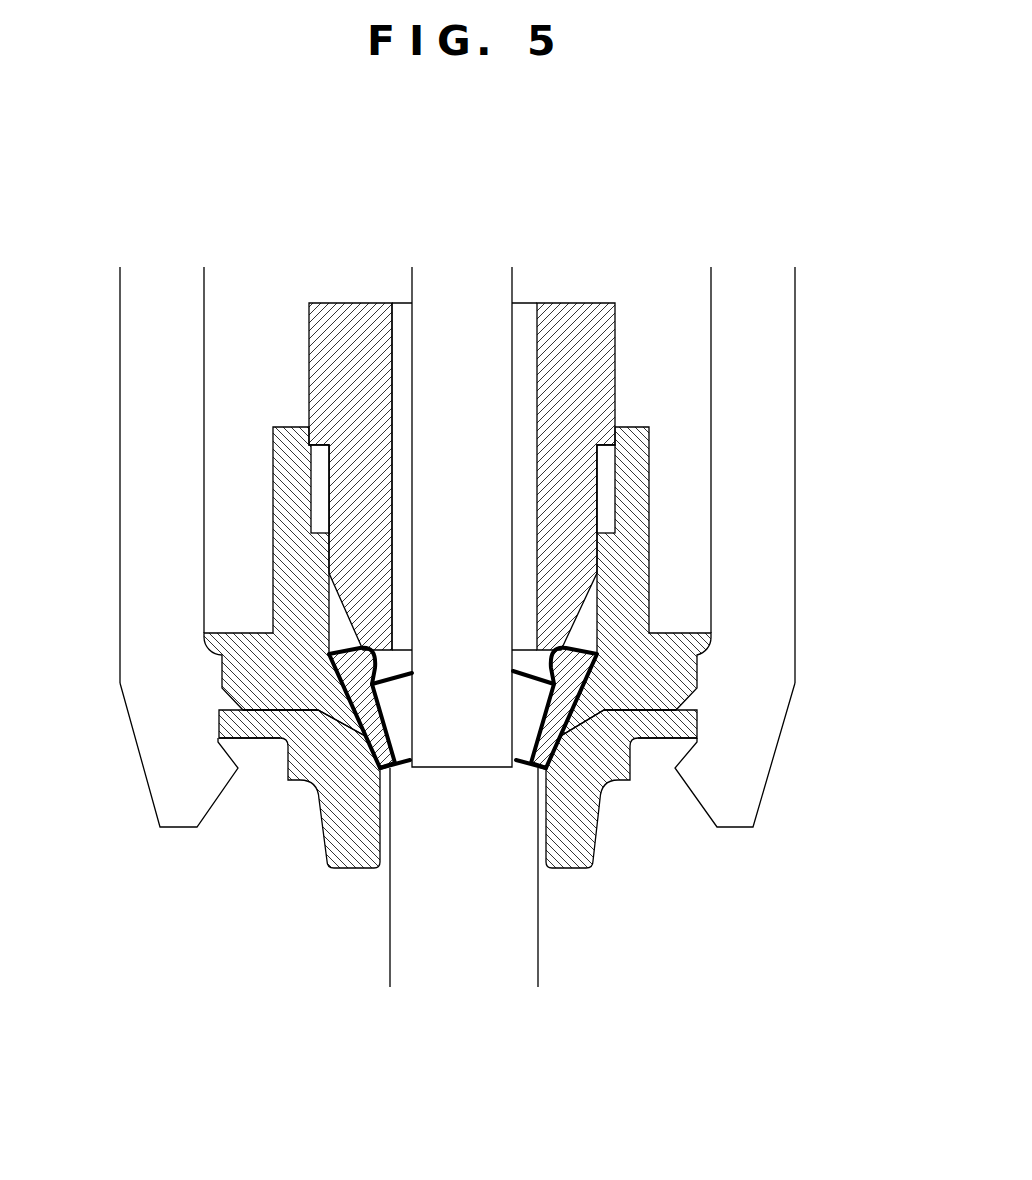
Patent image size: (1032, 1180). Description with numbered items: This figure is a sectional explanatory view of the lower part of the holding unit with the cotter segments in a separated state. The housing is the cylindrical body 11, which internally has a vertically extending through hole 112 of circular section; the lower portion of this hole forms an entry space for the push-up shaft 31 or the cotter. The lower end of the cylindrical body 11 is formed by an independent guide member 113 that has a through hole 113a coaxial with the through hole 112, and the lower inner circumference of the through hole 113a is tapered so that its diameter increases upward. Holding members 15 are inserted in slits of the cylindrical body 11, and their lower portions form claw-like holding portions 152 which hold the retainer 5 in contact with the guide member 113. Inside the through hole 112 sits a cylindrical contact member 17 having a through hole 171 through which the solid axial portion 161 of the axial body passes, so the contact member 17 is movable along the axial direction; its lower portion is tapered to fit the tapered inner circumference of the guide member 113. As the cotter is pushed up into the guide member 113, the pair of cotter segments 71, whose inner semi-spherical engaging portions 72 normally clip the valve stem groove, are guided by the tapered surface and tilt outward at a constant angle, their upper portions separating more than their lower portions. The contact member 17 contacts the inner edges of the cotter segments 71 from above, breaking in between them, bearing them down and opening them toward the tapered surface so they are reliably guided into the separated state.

The retainer 5 is at (590, 868).
The cylindrical body 11 is at (667, 287).
The through hole 112 is at (563, 292).
The guide member 113 is at (687, 672).
The through hole 113a is at (688, 740).
The holding member 15 is at (788, 578).
The holding portion 152 is at (743, 815).
The contact member 17 is at (327, 308).
The through hole 171 is at (403, 312).
The axial portion 161 is at (487, 522).
The push-up shaft 31 is at (478, 901).
The cotter segment 71 is at (555, 740).
The engaging portion 72 is at (373, 669).